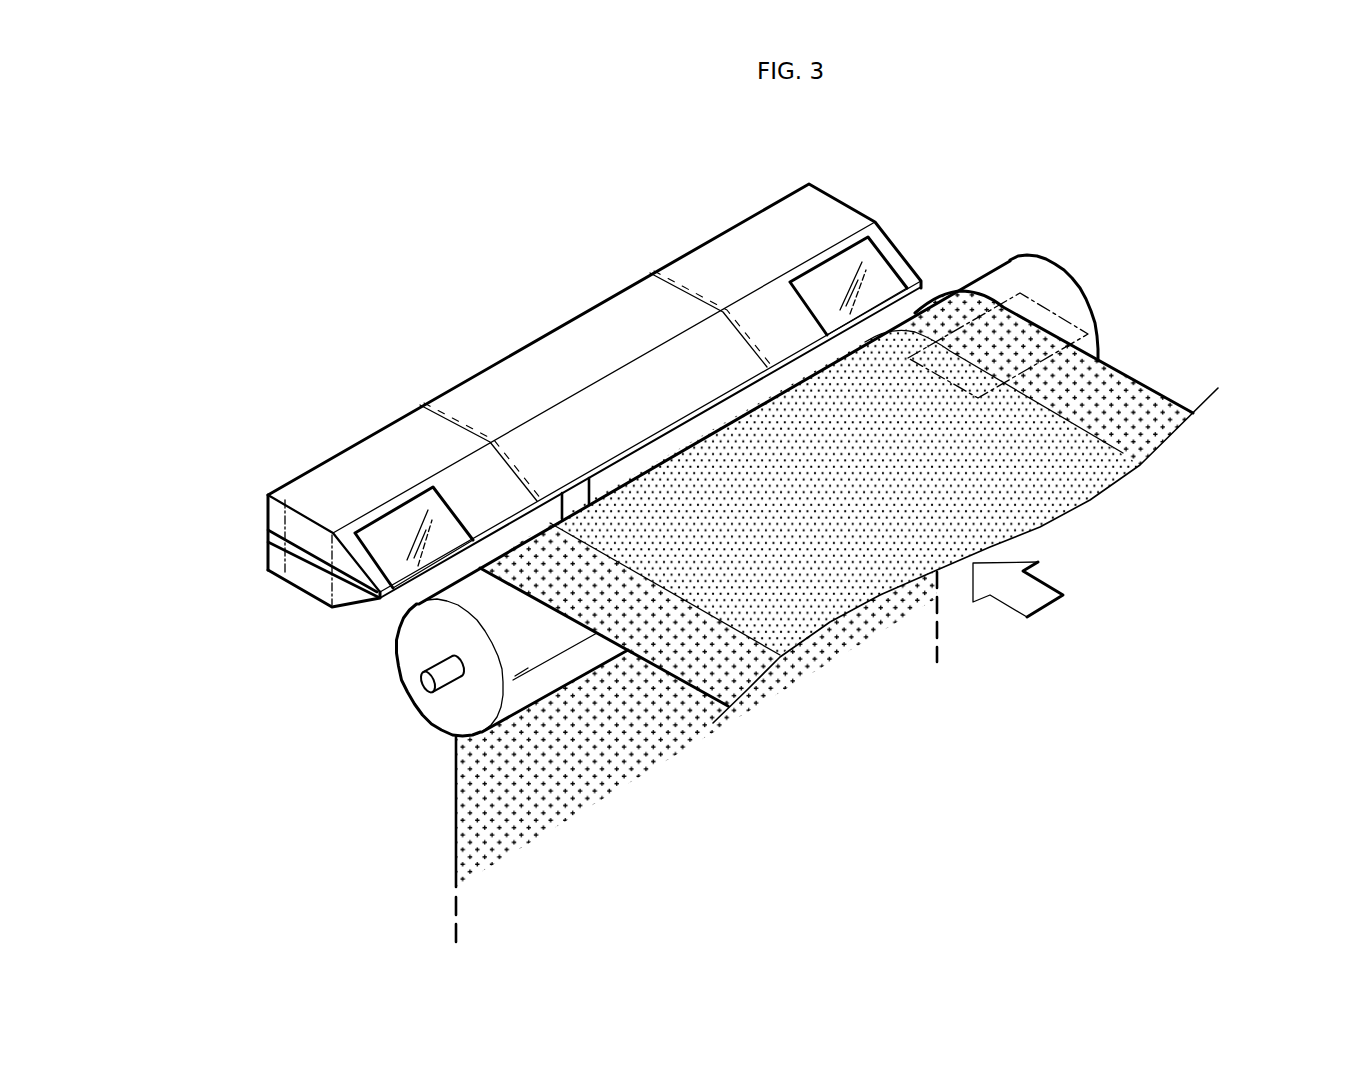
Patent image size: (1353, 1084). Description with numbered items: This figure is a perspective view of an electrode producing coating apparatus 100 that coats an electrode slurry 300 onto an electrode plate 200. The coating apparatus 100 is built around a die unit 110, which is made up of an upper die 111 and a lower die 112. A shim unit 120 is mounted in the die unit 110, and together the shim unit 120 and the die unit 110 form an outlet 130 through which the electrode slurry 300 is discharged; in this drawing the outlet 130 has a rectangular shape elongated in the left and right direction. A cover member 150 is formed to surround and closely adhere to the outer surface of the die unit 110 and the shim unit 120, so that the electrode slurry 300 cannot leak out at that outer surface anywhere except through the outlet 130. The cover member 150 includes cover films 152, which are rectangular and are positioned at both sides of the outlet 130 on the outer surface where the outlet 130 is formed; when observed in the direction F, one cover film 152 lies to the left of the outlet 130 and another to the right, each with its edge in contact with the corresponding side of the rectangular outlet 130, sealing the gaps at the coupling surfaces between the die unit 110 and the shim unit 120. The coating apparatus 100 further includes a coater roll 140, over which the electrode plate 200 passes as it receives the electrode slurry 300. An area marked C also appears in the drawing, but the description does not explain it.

The coating apparatus 100 is at (361, 222).
The die unit 110 is at (538, 395).
The upper die 111 is at (268, 510).
The lower die 112 is at (209, 494).
The shim unit 120 is at (307, 555).
The outlet 130 is at (655, 441).
The coater roll 140 is at (1008, 282).
The cover member 150 is at (402, 493).
The cover film 152 is at (385, 530).
The electrode plate 200 is at (1153, 430).
The electrode slurry 300 is at (1067, 492).
The coating region C is at (1073, 323).
The direction F is at (1018, 589).